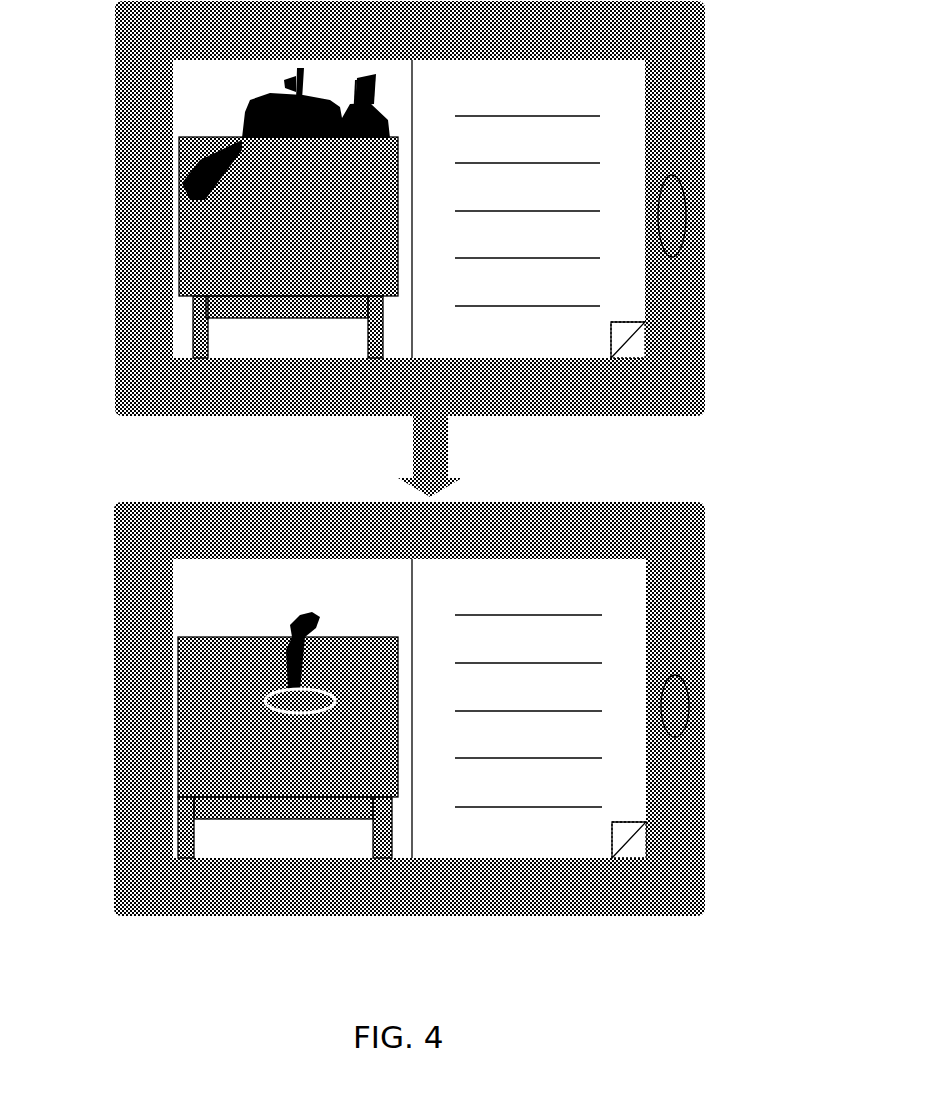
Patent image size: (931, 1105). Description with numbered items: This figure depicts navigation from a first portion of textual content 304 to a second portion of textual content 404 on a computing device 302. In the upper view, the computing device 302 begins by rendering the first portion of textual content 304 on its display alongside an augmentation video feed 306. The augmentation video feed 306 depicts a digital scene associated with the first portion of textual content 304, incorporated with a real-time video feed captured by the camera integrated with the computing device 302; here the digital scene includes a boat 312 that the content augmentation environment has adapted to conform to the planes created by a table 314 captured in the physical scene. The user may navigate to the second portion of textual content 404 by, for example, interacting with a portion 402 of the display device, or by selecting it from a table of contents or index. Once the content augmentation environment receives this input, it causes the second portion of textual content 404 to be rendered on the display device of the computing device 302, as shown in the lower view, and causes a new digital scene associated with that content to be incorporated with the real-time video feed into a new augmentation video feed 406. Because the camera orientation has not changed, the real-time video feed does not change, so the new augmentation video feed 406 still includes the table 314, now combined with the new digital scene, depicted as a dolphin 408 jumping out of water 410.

The computing device 302 is at (705, 77).
The first portion of textual content 304 is at (618, 300).
The augmentation video feed 306 is at (197, 79).
The boat 312 is at (318, 104).
The table 314 is at (208, 135).
The portion 402 is at (633, 342).
The second portion of textual content 404 is at (625, 797).
The new augmentation video feed 406 is at (190, 581).
The dolphin 408 is at (292, 668).
The water 410 is at (280, 707).